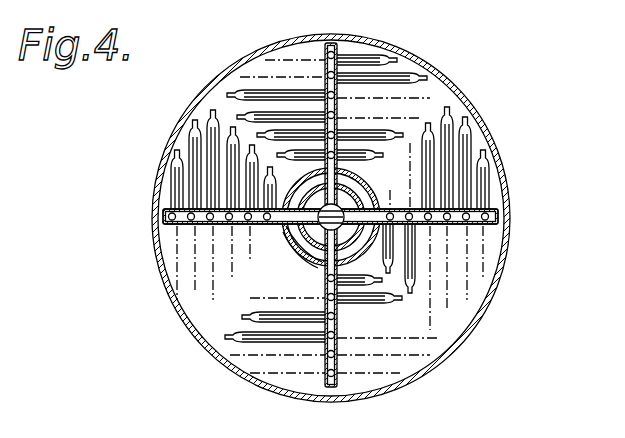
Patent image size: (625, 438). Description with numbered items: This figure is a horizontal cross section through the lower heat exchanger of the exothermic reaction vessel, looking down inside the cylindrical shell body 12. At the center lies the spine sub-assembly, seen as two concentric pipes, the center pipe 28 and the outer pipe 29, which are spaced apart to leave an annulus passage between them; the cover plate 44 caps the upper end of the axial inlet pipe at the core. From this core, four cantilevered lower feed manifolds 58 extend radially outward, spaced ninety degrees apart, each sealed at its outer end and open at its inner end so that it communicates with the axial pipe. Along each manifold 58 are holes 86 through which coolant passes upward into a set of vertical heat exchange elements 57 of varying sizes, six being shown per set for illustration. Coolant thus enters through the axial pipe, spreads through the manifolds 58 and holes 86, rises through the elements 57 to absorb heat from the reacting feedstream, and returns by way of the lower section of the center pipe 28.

The cylindrical shell body 12 is at (398, 44).
The center pipe 28 is at (300, 245).
The outer pipe 29 is at (360, 182).
The cover plate 44 is at (306, 263).
The heat exchange elements 57 is at (175, 148).
The lower feed manifolds 58 is at (333, 43).
The holes 86 is at (336, 117).